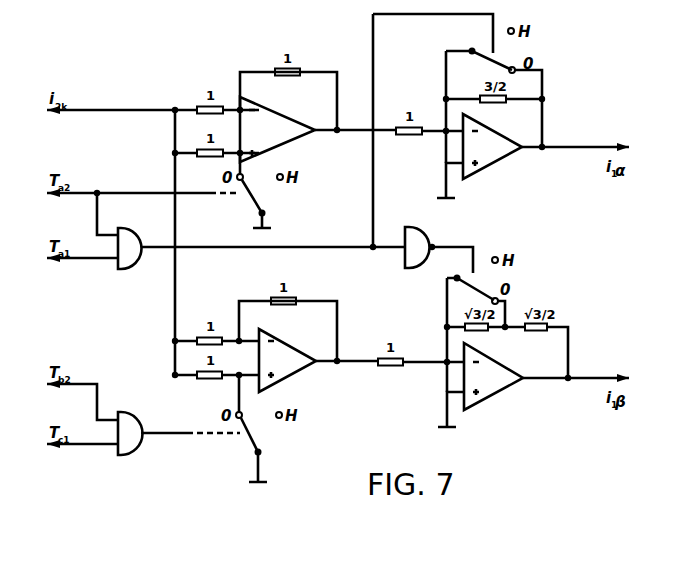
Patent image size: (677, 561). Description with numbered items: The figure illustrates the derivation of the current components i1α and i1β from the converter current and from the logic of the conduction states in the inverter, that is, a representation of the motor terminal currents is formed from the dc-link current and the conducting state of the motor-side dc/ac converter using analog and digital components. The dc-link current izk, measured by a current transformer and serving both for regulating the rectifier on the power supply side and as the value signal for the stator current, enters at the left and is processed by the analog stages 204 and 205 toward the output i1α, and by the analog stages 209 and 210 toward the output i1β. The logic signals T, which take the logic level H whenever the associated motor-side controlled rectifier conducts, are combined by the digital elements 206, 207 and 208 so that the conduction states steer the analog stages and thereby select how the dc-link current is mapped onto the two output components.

The operational amplifier 204 is at (288, 116).
The operational amplifier 205 is at (533, 156).
The AND gate 206 is at (261, 246).
The AND gate 207 is at (439, 246).
The AND gate 208 is at (141, 429).
The operational amplifier 209 is at (288, 345).
The operational amplifier 210 is at (533, 385).